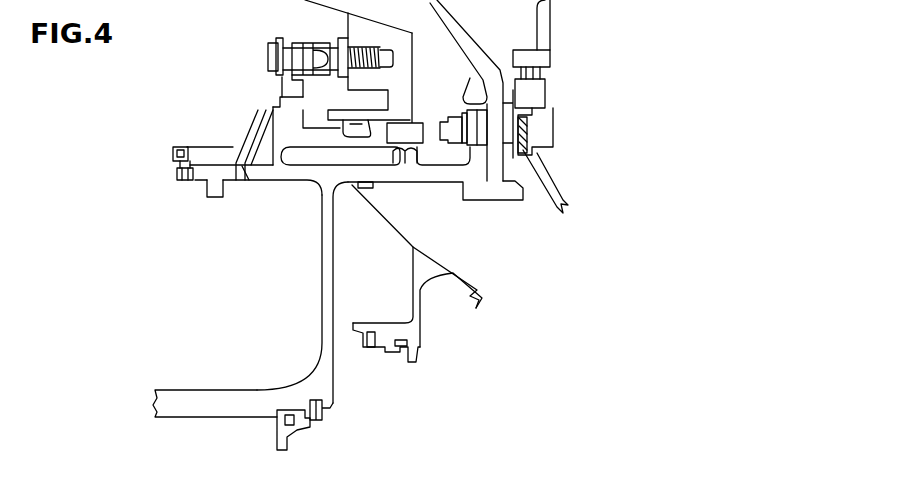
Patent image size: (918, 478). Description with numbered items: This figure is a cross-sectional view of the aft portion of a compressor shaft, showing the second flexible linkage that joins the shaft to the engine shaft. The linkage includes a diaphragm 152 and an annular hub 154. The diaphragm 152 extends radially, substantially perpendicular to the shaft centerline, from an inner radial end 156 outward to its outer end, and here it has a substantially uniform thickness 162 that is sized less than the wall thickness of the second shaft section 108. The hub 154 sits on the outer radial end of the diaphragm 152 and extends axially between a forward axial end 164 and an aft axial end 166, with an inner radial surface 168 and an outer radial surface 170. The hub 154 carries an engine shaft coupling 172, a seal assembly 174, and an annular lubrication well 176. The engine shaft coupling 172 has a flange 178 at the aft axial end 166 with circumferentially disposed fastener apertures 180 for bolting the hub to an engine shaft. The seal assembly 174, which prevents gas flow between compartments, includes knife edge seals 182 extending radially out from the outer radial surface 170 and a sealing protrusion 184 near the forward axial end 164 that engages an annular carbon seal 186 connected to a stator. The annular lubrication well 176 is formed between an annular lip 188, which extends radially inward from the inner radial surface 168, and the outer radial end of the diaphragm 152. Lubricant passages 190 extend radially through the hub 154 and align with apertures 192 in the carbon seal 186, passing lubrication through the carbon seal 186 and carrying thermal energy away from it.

The second shaft section 108 is at (187, 398).
The diaphragm 152 is at (322, 323).
The annular hub 154 is at (431, 198).
The inner radial end 156 is at (350, 184).
The thickness 162 is at (335, 257).
The forward axial end 164 is at (177, 181).
The aft axial end 166 is at (475, 165).
The inner radial surface 168 is at (198, 186).
The outer radial surface 170 is at (313, 261).
The engine shaft coupling 172 is at (565, 98).
The seal assembly 174 is at (421, 112).
The annular lubrication well 176 is at (262, 188).
The flange 178 is at (458, 99).
The fastener apertures 180 is at (478, 135).
The knife edge seals 182 is at (411, 155).
The sealing protrusion 184 is at (281, 162).
The carbon seal 186 is at (243, 128).
The annular lip 188 is at (215, 199).
The lubricant passages 190 is at (243, 184).
The apertures 192 is at (250, 117).